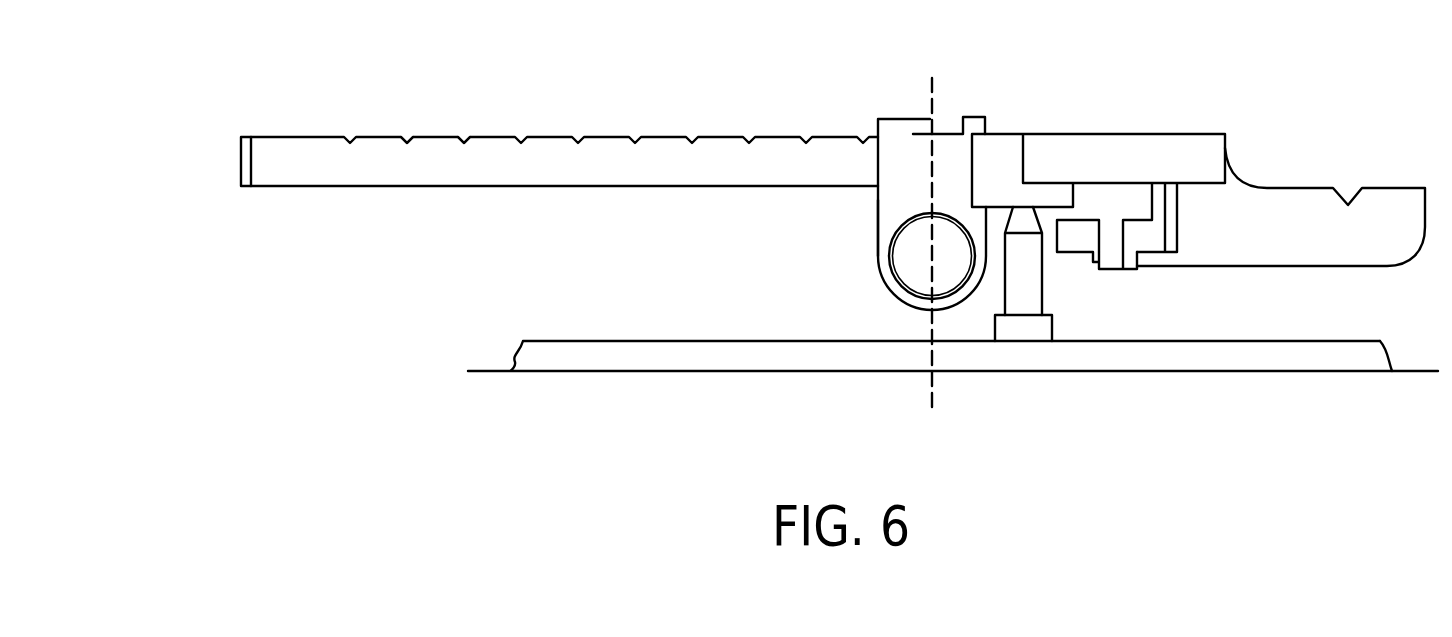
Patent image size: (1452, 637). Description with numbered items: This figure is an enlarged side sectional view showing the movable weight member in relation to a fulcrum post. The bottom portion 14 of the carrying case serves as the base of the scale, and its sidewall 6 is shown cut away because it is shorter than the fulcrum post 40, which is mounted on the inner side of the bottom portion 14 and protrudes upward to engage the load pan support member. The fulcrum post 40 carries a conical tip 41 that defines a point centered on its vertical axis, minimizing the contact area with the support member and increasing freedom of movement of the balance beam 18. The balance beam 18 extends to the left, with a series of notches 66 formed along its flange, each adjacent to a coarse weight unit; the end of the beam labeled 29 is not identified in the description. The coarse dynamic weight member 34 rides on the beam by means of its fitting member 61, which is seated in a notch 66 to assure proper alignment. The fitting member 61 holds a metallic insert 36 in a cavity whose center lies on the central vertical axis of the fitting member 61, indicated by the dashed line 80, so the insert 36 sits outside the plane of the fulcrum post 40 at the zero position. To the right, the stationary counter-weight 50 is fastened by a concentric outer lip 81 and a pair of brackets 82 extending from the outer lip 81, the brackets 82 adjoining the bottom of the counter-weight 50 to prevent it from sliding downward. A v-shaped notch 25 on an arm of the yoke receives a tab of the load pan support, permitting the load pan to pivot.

The sidewall 6 is at (1373, 353).
The bottom portion 14 is at (1282, 371).
The balance beam 18 is at (303, 150).
The v-shaped notch 25 is at (1348, 203).
The end cap 29 is at (241, 167).
The coarse dynamic weight member 34 is at (878, 119).
The metallic insert 36 is at (900, 258).
The fulcrum post 40 is at (1043, 300).
The conical tip 41 is at (1025, 222).
The stationary counter-weight 50 is at (1158, 243).
The fitting member 61 is at (888, 200).
The notch 66 is at (463, 138).
The dashed line 80 is at (932, 87).
The concentric outer lip 81 is at (1105, 190).
The bracket 82 is at (1110, 260).